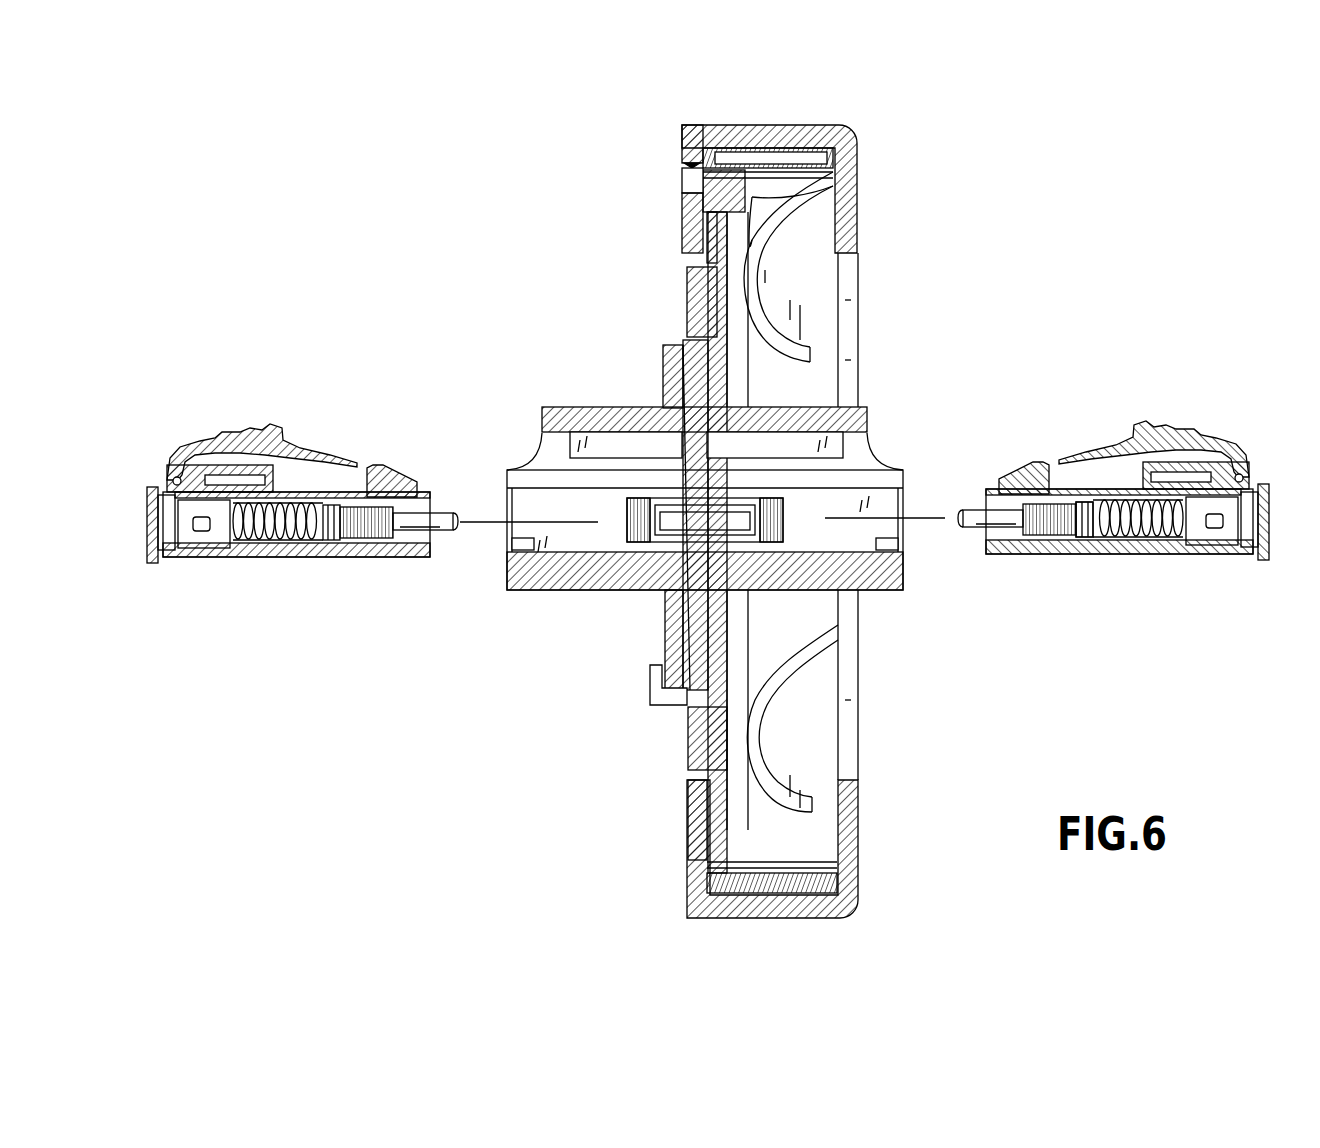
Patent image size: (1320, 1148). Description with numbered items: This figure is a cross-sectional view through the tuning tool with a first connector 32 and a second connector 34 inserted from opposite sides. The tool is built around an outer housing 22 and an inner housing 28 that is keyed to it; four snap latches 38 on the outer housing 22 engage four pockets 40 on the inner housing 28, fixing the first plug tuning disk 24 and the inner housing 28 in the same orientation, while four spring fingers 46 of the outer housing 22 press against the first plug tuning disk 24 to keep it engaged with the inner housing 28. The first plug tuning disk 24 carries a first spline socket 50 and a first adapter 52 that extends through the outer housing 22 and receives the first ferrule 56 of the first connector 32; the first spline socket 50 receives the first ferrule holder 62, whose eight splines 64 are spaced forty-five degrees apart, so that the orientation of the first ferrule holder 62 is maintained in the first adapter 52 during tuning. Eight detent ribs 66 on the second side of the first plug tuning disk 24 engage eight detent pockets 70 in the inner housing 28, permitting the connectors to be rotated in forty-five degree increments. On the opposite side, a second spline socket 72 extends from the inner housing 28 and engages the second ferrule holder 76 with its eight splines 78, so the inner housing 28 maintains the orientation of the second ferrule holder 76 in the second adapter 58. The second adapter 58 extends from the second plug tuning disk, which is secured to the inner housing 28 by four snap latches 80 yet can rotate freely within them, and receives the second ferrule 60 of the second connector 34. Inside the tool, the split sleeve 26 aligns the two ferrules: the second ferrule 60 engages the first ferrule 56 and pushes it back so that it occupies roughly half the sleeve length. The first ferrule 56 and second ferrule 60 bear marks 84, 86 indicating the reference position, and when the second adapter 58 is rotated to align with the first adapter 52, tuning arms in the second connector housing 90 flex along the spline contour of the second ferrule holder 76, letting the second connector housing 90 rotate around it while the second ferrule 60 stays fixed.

The outer housing 22 is at (820, 125).
The first plug tuning disk 24 is at (700, 125).
The split sleeve 26 is at (660, 590).
The inner housing 28 is at (840, 178).
The first connector 32 is at (1092, 398).
The second connector 34 is at (310, 420).
The snap latches 38 is at (690, 160).
The pockets 40 is at (690, 180).
The spring fingers 46 is at (800, 323).
The first spline socket 50 is at (787, 515).
The first adapter 52 is at (835, 540).
The first ferrule 56 is at (960, 528).
The second adapter 58 is at (573, 535).
The second ferrule 60 is at (452, 535).
The first ferrule holder 62 is at (1085, 528).
The splines 64 is at (1032, 550).
The detent ribs 66 is at (695, 310).
The detent pockets 70 is at (690, 262).
The second spline socket 72 is at (625, 515).
The second ferrule holder 76 is at (300, 545).
The splines 78 is at (372, 543).
The snap latches 80 is at (655, 698).
The mark 84 is at (970, 535).
The mark 86 is at (440, 540).
The second connector housing 90 is at (220, 553).